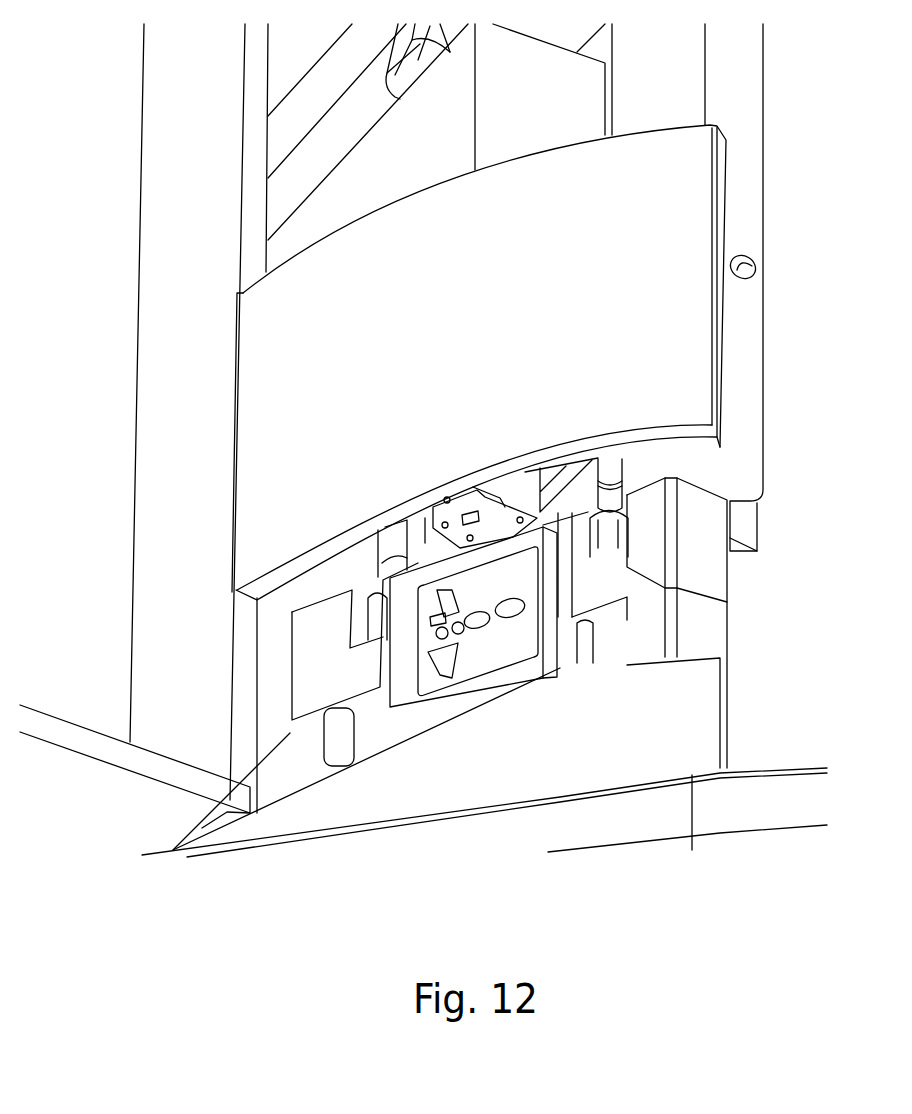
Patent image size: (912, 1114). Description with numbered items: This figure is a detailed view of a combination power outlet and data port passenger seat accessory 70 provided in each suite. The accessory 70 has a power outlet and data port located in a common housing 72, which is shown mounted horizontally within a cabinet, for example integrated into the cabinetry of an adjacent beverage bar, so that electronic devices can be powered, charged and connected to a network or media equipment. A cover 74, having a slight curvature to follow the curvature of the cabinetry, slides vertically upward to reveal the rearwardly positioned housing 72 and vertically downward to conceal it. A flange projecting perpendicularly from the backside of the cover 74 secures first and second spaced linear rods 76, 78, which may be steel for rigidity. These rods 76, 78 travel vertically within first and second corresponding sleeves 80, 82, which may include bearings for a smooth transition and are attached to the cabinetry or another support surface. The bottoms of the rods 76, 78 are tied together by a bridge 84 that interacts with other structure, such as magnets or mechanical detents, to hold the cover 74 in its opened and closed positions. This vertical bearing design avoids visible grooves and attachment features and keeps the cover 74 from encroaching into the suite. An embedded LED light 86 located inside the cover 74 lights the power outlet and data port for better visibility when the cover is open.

The combination power outlet and data port passenger seat accessory 70 is at (788, 237).
The housing 72 is at (402, 703).
The cover 74 is at (258, 392).
The first linear rod 76 is at (537, 513).
The second linear rod 78 is at (613, 467).
The first sleeve 80 is at (378, 618).
The second sleeve 82 is at (602, 533).
The bridge 84 is at (355, 725).
The embedded LED light 86 is at (475, 510).